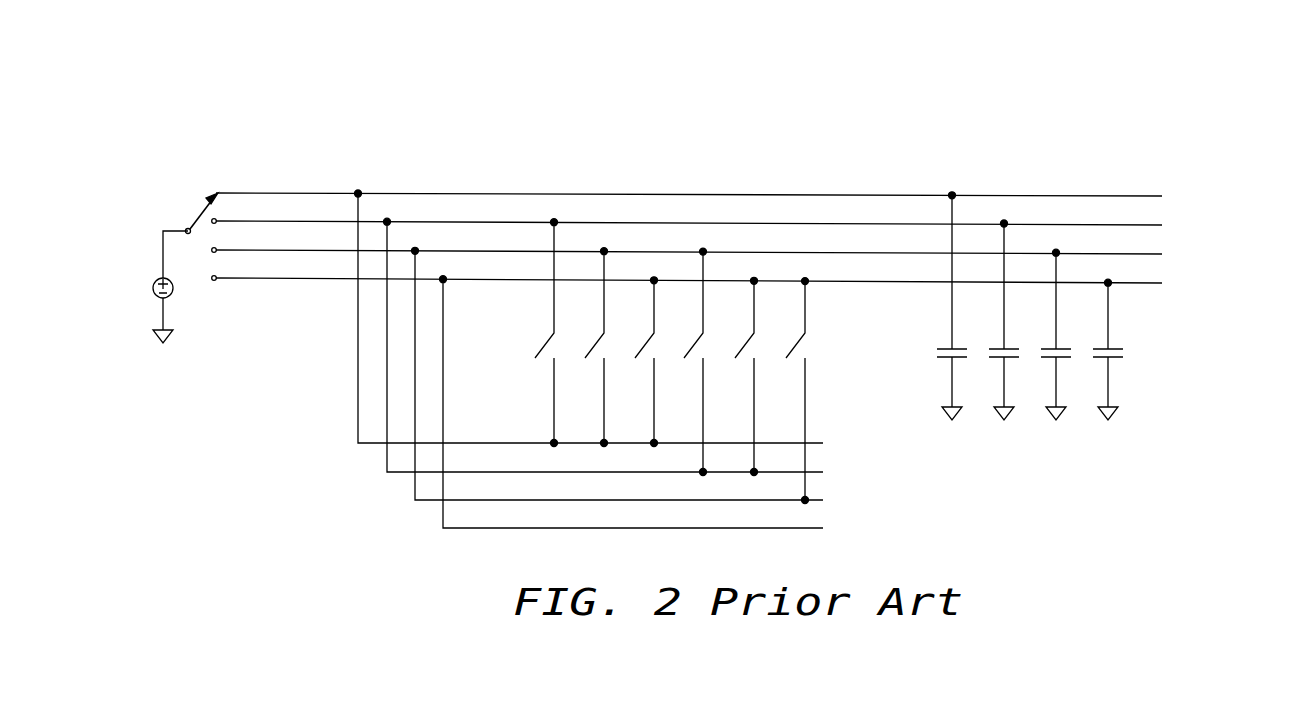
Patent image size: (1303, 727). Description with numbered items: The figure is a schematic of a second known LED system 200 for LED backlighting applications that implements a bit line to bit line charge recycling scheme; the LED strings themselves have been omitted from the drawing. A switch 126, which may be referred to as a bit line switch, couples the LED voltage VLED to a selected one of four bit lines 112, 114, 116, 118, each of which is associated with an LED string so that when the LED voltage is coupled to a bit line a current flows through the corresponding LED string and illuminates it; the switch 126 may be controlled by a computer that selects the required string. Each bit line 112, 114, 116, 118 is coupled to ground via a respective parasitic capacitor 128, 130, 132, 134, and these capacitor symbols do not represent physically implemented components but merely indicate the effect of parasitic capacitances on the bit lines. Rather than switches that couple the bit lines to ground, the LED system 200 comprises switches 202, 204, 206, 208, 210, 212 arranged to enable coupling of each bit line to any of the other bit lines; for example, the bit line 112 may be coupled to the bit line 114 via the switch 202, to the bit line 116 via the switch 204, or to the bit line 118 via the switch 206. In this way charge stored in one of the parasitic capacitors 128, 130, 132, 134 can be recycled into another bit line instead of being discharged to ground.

The LED system 200 is at (312, 84).
The switch 126 is at (190, 222).
The bit line 112 is at (702, 193).
The bit line 114 is at (749, 222).
The bit line 116 is at (802, 251).
The bit line 118 is at (856, 281).
The switch 202 is at (540, 352).
The switch 204 is at (590, 352).
The switch 206 is at (640, 352).
The switch 208 is at (689, 352).
The switch 210 is at (740, 352).
The switch 212 is at (791, 352).
The parasitic capacitor 128 is at (934, 352).
The parasitic capacitor 130 is at (986, 352).
The parasitic capacitor 132 is at (1038, 352).
The parasitic capacitor 134 is at (1090, 352).